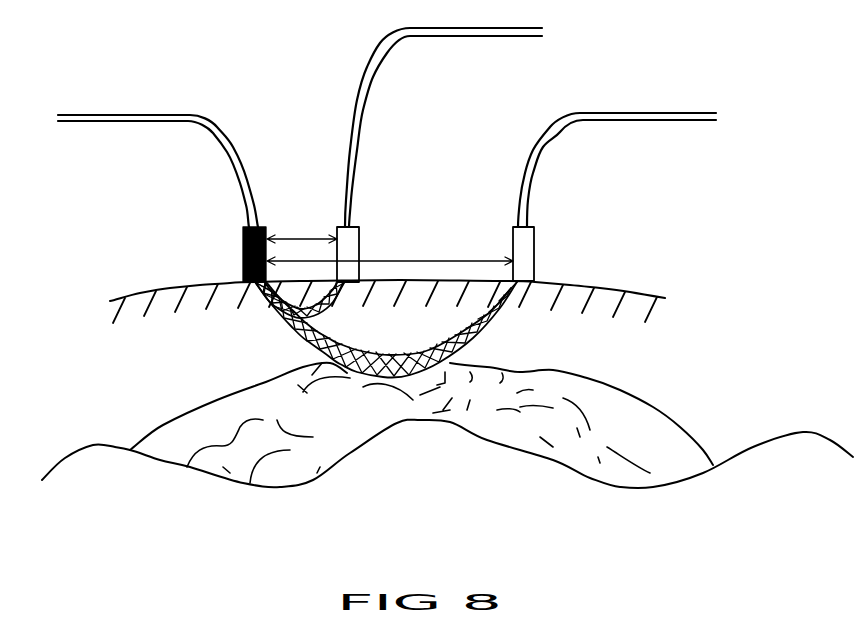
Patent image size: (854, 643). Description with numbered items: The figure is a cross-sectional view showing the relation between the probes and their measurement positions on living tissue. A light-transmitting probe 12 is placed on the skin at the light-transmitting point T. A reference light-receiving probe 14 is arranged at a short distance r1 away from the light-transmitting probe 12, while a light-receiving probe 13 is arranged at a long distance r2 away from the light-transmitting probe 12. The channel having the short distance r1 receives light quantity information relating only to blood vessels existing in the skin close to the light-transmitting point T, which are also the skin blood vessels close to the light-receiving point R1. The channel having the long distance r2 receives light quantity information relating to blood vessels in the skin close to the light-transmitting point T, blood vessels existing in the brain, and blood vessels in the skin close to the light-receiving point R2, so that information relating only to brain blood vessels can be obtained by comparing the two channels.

The light-transmitting probe 12 is at (243, 245).
The light-receiving probe 13 is at (540, 229).
The reference light-receiving probe 14 is at (340, 227).
The light-transmitting point T is at (233, 281).
The light-receiving point R1 is at (371, 275).
The light-receiving point R2 is at (544, 282).
The short distance r1 is at (302, 227).
The long distance r2 is at (390, 251).